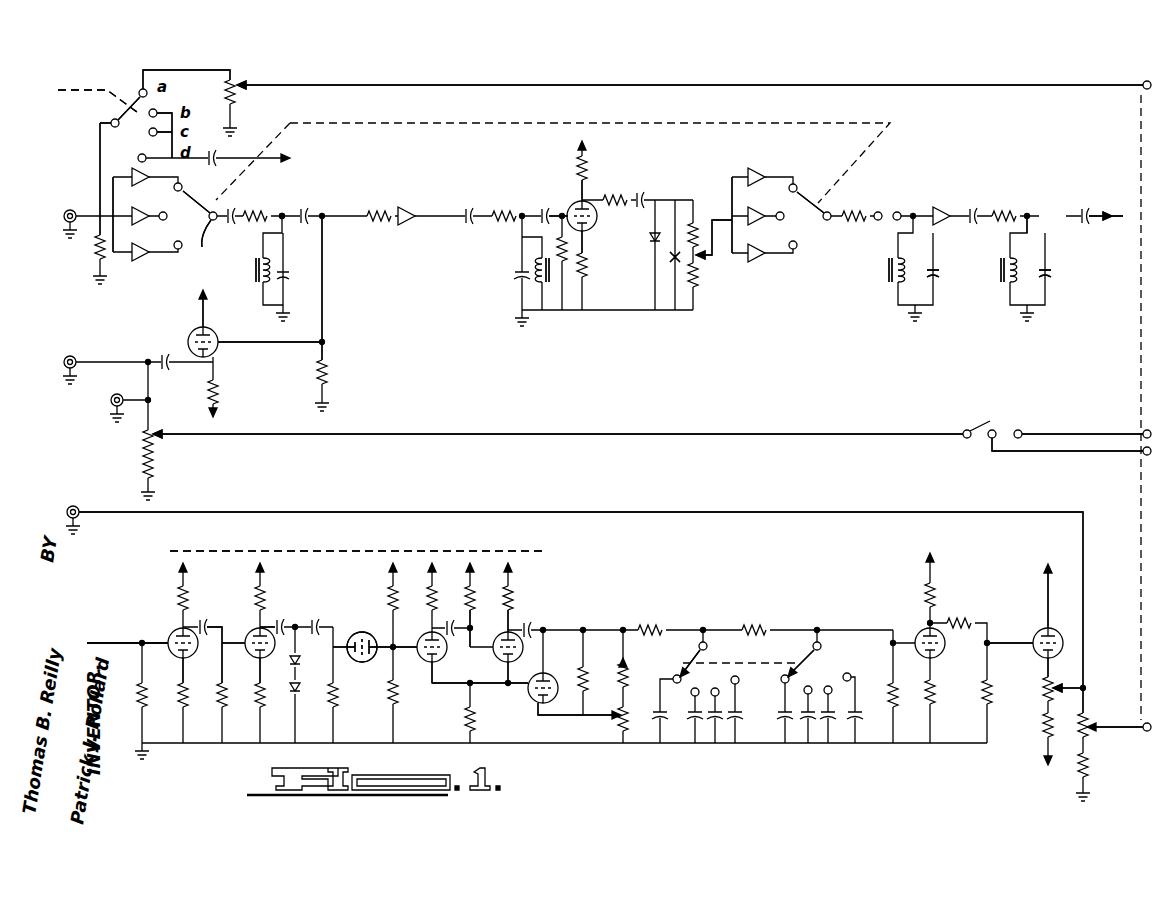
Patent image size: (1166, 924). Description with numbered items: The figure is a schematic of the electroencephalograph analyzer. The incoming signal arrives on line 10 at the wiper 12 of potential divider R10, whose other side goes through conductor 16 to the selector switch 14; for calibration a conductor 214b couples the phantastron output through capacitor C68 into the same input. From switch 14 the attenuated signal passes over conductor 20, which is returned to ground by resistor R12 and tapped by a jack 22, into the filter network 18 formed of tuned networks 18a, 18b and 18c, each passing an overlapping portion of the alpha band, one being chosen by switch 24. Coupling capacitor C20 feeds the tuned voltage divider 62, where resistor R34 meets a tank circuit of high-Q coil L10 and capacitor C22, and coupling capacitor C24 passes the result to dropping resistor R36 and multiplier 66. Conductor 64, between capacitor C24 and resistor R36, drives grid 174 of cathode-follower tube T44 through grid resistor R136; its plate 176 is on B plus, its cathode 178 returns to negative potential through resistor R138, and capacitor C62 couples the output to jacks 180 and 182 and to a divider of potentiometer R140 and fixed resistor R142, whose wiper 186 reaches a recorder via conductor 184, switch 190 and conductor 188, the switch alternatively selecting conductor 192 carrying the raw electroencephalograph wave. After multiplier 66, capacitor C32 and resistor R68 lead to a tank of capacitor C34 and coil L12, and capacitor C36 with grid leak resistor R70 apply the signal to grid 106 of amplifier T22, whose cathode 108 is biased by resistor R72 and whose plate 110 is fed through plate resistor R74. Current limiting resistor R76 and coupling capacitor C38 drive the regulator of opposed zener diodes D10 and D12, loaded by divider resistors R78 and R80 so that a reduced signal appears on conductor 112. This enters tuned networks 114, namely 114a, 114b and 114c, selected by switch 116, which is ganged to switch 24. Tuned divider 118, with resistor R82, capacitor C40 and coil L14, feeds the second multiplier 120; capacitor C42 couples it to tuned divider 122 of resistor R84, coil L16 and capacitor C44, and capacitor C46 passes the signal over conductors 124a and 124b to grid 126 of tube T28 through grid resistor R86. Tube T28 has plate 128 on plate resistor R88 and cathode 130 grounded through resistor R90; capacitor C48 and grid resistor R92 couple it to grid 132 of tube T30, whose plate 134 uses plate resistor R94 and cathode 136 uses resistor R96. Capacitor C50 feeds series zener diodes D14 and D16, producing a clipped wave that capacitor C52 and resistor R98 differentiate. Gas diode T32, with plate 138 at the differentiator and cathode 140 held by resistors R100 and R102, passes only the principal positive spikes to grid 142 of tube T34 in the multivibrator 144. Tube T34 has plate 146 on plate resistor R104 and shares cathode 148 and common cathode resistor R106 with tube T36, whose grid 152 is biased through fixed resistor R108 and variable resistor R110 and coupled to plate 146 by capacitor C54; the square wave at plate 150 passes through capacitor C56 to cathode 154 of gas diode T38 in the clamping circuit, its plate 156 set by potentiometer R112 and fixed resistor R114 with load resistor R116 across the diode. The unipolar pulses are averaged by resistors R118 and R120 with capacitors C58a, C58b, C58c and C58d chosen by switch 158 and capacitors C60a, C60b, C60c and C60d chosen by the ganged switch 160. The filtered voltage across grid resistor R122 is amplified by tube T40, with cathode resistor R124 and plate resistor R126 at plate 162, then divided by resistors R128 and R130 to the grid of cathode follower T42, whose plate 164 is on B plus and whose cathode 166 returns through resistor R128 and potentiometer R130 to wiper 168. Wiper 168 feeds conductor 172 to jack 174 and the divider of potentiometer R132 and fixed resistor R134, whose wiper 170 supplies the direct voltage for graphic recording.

The line 10 is at (820, 84).
The wiper 12 is at (248, 84).
The selector switch 14 is at (108, 118).
The conductor 16 is at (172, 68).
The filter network 18 is at (167, 259).
The tuned network 18a is at (154, 185).
The tuned network 18b is at (155, 224).
The tuned network 18c is at (137, 266).
The conductor 20 is at (98, 147).
The jack 22 is at (63, 216).
The selector switch 24 is at (193, 222).
The potential divider R10 is at (238, 78).
The resistor R12 is at (95, 250).
The conductor 214b is at (214, 131).
The capacitor C68 is at (212, 151).
The coupling and blocking capacitor C20 is at (233, 208).
The resistor R34 is at (256, 210).
The tuned voltage divider 62 is at (286, 208).
The coupling and blocking capacitor C24 is at (309, 210).
The inductance coil L10 is at (262, 255).
The capacitor C22 is at (278, 281).
The conductor 64 is at (326, 266).
The grid resistor R136 is at (330, 372).
The triode T44 is at (194, 330).
The plate 176 is at (229, 309).
The jack 174 is at (216, 335).
The cathode 178 is at (220, 350).
The capacitor C62 is at (166, 352).
The output jack 180 is at (70, 355).
The output jack 182 is at (120, 394).
The resistor R138 is at (216, 392).
The wiper 186 is at (158, 432).
The conductor 184 is at (258, 433).
The potentiometer R140 is at (144, 437).
The fixed resistor R142 is at (152, 468).
The dropping resistor R36 is at (374, 210).
The multiplier circuit 66 is at (406, 208).
The capacitor C32 is at (469, 208).
The resistor R68 is at (500, 210).
The capacitor C34 is at (513, 275).
The high Q coil L12 is at (543, 300).
The coupling and isolating capacitor C36 is at (545, 208).
The grid 106 is at (568, 208).
The voltage amplifying tube T22 is at (599, 223).
The plate 110 is at (588, 200).
The plate resistor R74 is at (588, 170).
The current limiting resistor R76 is at (617, 194).
The coupling capacitor C38 is at (642, 194).
The cathode 108 is at (590, 236).
The cathode biasing resistor R72 is at (588, 264).
The grid leak resistor R70 is at (568, 256).
The zener diode D10 is at (650, 243).
The zener diode D12 is at (673, 300).
The load resistor R78 is at (693, 222).
The load resistor R80 is at (697, 284).
The conductor 112 is at (702, 256).
The tuned network 114a is at (760, 172).
The tuned network 114b is at (776, 206).
The tuned network 114c is at (775, 243).
The plurality of tuned networks 114 is at (775, 270).
The switch 116 is at (808, 195).
The resistor R82 is at (854, 212).
The tuned voltage divider network 118 is at (872, 224).
The multiplier circuit 120 is at (938, 207).
The coupling and isolating capacitor C42 is at (975, 209).
The resistor R84 is at (1004, 211).
The coupling and isolating capacitor C46 is at (1087, 208).
The conductor 124a is at (1110, 222).
The high-Q coil L14 is at (893, 286).
The capacitor C40 is at (938, 268).
The tuned voltage divider network 122 is at (1008, 224).
The high-Q coil L16 is at (1005, 286).
The capacitor C44 is at (1052, 275).
The switch 190 is at (976, 425).
The conductor 192 is at (1066, 430).
The conductor 188 is at (1150, 455).
The conductor 172 is at (1015, 510).
The conductor 124b is at (112, 637).
The grid 126 is at (168, 638).
The vacuum tube T28 is at (178, 628).
The plate resistor R88 is at (190, 598).
The coupling capacitor C48 is at (203, 620).
The grid resistor R86 is at (142, 686).
The cathode lead 130 is at (178, 657).
The plate 128 is at (212, 655).
The self-biasing cathode resistor R90 is at (188, 702).
The grid resistor R92 is at (222, 705).
The amplifying tube T30 is at (257, 627).
The plate resistor R94 is at (267, 598).
The plate 134 is at (268, 624).
The coupling capacitor C50 is at (282, 621).
The zener diode D14 is at (299, 652).
The grid 132 is at (255, 658).
The cathode 136 is at (258, 672).
The zener diode D16 is at (315, 707).
The cathode biasing resistor R96 is at (266, 706).
The capacitor C52 is at (321, 621).
The gas tube diode T32 is at (362, 630).
The cathode 140 is at (372, 640).
The grid 142 is at (419, 642).
The plate 138 is at (354, 662).
The resistor R98 is at (336, 702).
The resistor R100 is at (396, 580).
The variable resistor R102 is at (398, 702).
The tube T34 is at (428, 662).
The plate resistor R104 is at (433, 580).
The multivibrator circuit 144 is at (454, 578).
The coupling capacitor C54 is at (450, 625).
The fixed resistor R108 is at (493, 596).
The grid 152 is at (495, 623).
The plate 146 is at (461, 666).
The cathode 148 is at (440, 683).
The common cathode resistor R106 is at (471, 732).
The variable resistor R110 is at (510, 580).
The tube T36 is at (516, 630).
The plate 150 is at (521, 635).
The capacitor C56 is at (533, 625).
The cathode 154 is at (510, 668).
The gas diode T38 is at (550, 676).
The plate 156 is at (537, 704).
The load resistor R116 is at (586, 670).
The fixed resistor R114 is at (628, 672).
The potentiometer R112 is at (633, 735).
The resistor R118 is at (650, 625).
The resistor R120 is at (754, 625).
The multi-position switch 158 is at (708, 646).
The multiposition switch 160 is at (822, 646).
The capacitor C58a is at (662, 722).
The capacitor C58b is at (696, 722).
The capacitor C58c is at (716, 722).
The capacitor C58d is at (737, 722).
The capacitor C60a is at (780, 712).
The capacitor C60b is at (809, 722).
The capacitor C60c is at (829, 722).
The capacitor C60d is at (856, 722).
The grid resistor R122 is at (889, 690).
The triode T40 is at (920, 628).
The plate resistor R126 is at (935, 590).
The resistor R128 is at (959, 620).
The plate 162 is at (1035, 644).
The triode T42 is at (1036, 628).
The plate 164 is at (1060, 638).
The cathode 166 is at (1036, 660).
The potentiometer R130 is at (1055, 688).
The wiper 168 is at (1072, 690).
The potentiometer R132 is at (1087, 724).
The self-biasing resistor R124 is at (931, 703).
The wiper 170 is at (1110, 728).
The fixed resistor R134 is at (1090, 772).